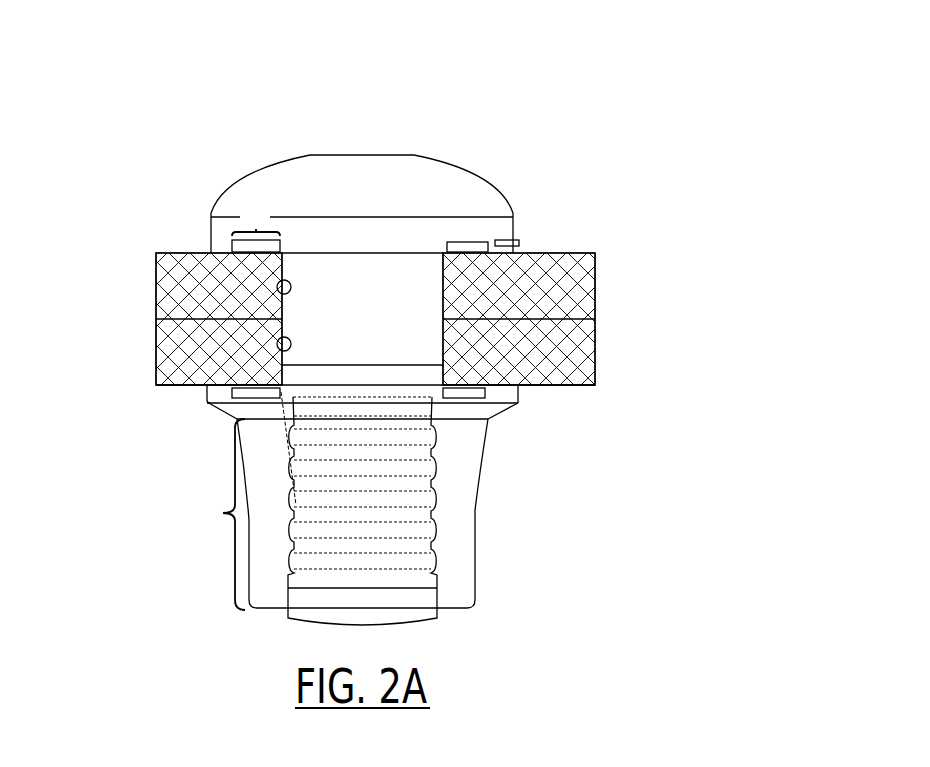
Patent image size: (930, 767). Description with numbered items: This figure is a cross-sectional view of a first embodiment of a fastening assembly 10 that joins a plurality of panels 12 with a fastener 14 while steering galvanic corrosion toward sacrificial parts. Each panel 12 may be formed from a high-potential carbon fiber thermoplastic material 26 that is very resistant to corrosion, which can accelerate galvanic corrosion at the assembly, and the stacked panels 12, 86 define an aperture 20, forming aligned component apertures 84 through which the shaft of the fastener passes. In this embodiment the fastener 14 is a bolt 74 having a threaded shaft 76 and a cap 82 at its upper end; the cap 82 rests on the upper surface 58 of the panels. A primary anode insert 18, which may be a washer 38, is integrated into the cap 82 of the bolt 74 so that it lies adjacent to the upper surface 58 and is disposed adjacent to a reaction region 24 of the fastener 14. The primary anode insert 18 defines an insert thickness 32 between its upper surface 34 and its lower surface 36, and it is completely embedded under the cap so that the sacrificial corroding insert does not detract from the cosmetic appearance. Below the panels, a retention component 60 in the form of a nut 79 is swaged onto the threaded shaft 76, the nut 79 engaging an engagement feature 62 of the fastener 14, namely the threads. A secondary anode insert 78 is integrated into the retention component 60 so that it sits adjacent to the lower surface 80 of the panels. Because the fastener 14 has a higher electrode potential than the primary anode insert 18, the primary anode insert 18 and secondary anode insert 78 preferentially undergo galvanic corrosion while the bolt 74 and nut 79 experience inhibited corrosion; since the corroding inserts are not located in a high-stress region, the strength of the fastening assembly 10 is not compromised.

The fastening assembly 10 is at (520, 90).
The panel 12 is at (414, 318).
The fastener 14 is at (375, 197).
The primary anode insert 18 is at (332, 271).
The aperture 20 is at (181, 295).
The reaction region 24 is at (256, 219).
The carbon fiber thermoplastic material 26 is at (550, 294).
The insert thickness 32 is at (520, 245).
The upper surface 34 is at (463, 242).
The lower surface 36 is at (473, 253).
The washer 38 is at (232, 245).
The upper surface 58 is at (587, 253).
The retention component 60 is at (347, 508).
The engagement feature 62 is at (430, 440).
The bolt 74 is at (288, 162).
The threaded shaft 76 is at (222, 514).
The secondary anode insert 78 is at (237, 419).
The nut 79 is at (465, 578).
The lower surface 80 is at (185, 383).
The cap 82 is at (245, 178).
The component apertures 84 is at (277, 291).
The housing half 86 is at (590, 283).